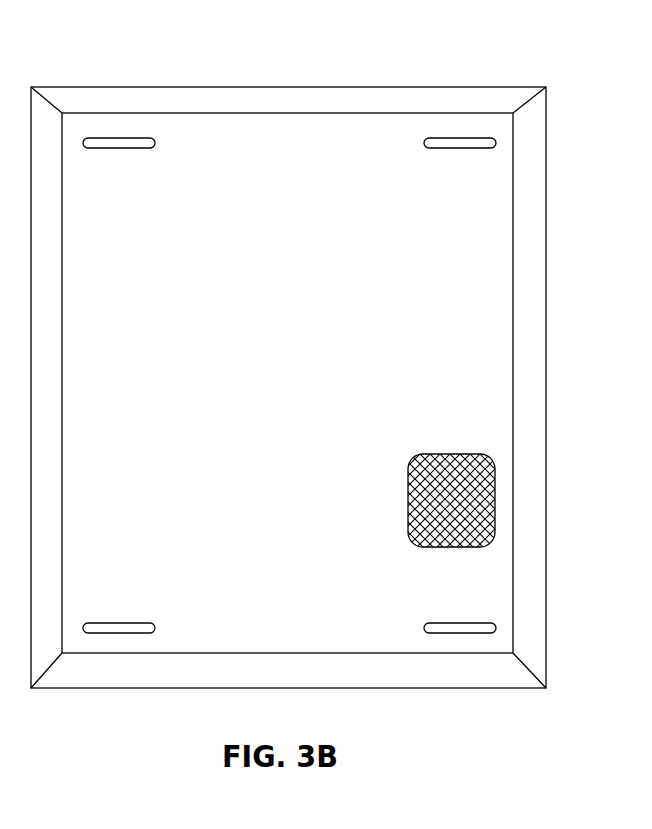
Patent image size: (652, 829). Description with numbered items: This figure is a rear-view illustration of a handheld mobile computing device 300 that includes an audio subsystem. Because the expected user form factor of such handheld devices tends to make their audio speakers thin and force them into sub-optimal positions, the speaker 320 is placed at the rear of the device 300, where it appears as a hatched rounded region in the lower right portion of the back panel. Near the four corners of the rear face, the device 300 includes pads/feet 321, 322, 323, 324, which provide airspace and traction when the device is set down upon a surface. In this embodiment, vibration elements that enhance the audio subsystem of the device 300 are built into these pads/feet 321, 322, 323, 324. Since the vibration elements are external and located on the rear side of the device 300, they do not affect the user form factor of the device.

The device 300 is at (294, 86).
The speaker 320 is at (475, 508).
The pad/foot 321 is at (100, 633).
The pad/foot 322 is at (460, 625).
The pad/foot 323 is at (126, 147).
The pad/foot 324 is at (464, 138).